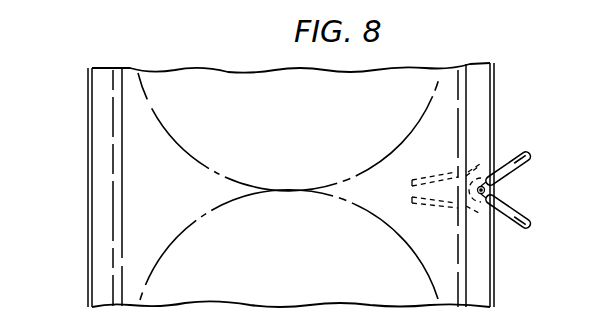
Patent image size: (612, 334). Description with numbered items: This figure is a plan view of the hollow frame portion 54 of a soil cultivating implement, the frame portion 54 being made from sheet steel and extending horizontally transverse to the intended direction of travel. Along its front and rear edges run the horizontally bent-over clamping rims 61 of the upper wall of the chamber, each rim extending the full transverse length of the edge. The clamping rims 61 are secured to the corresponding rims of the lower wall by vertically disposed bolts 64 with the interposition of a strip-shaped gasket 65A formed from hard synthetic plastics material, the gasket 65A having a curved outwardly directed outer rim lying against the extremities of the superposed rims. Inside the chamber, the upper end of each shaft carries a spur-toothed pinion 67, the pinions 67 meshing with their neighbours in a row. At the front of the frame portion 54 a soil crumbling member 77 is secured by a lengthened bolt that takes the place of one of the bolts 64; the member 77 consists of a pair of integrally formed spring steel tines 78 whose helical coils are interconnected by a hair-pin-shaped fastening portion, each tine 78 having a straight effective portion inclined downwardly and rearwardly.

The hollow frame portion 54 is at (260, 62).
The clamping rim 61 is at (110, 69).
The gasket 65A is at (88, 107).
The pinion 67 is at (224, 179).
The tine 78 is at (410, 189).
The soil crumbling member 77 is at (532, 150).
The bolt 64 is at (478, 205).